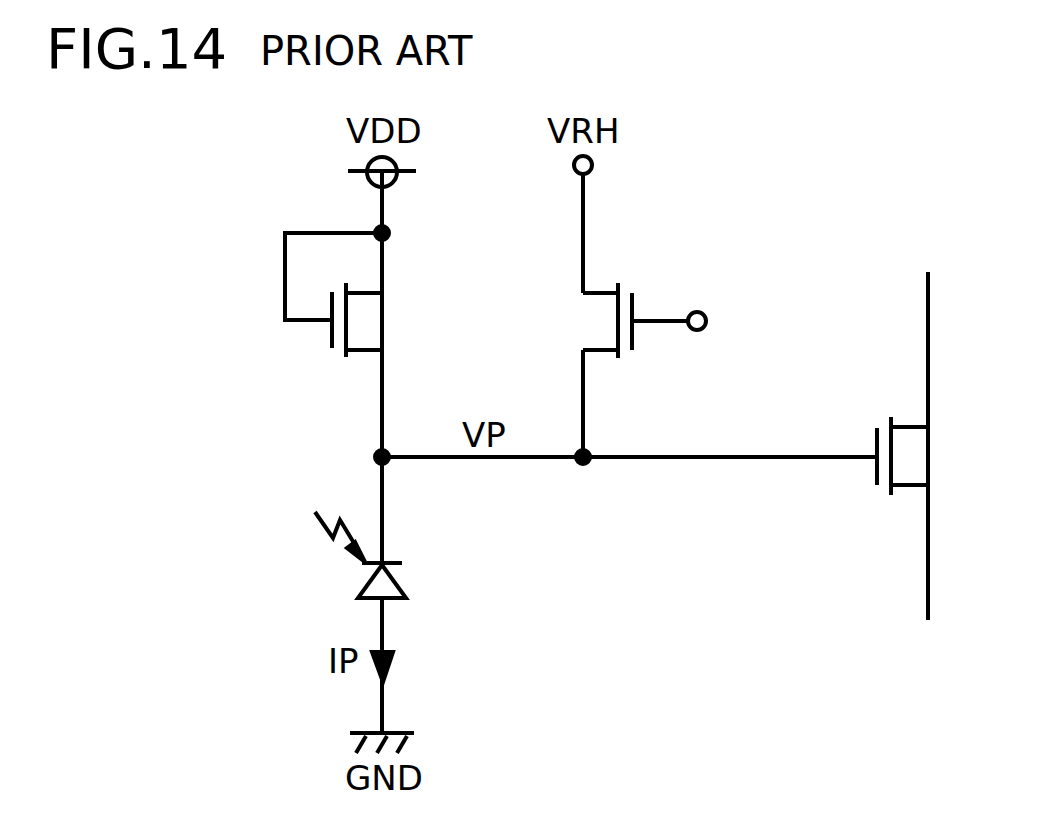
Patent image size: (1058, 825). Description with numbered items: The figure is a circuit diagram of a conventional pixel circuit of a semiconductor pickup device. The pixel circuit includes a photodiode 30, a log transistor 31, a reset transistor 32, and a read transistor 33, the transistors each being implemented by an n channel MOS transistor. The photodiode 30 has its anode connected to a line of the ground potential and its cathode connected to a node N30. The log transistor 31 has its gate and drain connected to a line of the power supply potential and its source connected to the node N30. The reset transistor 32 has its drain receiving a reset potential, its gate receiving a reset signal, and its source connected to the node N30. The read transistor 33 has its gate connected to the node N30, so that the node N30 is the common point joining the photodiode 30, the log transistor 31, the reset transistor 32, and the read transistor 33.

The photodiode 30 is at (400, 583).
The log transistor 31 is at (367, 355).
The reset transistor 32 is at (600, 292).
The read transistor 33 is at (912, 422).
The node N30 is at (387, 467).